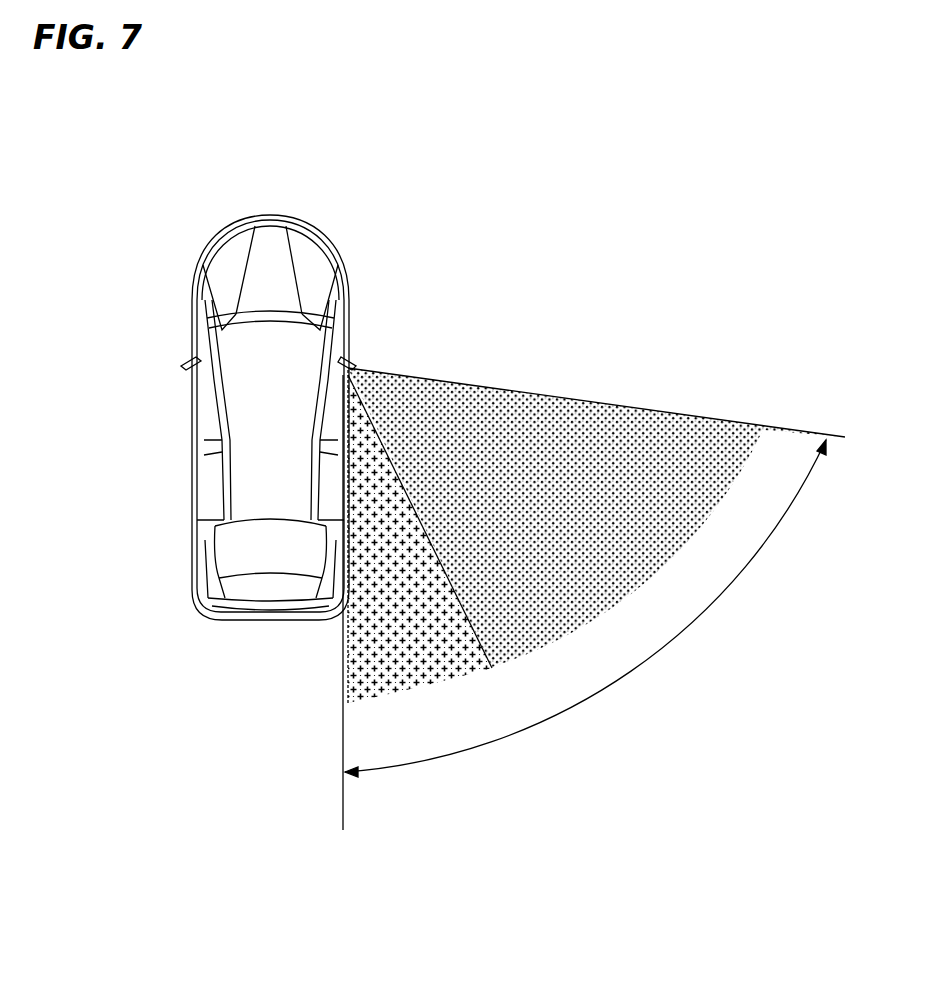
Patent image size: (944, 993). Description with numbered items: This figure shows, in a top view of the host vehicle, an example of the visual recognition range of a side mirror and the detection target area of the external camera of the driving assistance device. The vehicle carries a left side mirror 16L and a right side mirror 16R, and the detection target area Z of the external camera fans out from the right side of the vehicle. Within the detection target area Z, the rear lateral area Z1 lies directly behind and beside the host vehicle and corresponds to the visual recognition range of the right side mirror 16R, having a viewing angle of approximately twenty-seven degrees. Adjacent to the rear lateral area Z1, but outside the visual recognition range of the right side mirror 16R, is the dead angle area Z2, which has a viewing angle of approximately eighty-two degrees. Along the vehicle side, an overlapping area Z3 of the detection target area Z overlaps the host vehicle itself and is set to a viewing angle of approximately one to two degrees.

The left side mirror / sensor 16L is at (184, 360).
The right side mirror 16R is at (356, 362).
The detection target area Z is at (633, 668).
The rear lateral area Z1 is at (400, 688).
The dead angle area Z2 is at (608, 425).
The overlapping area Z3 is at (343, 653).